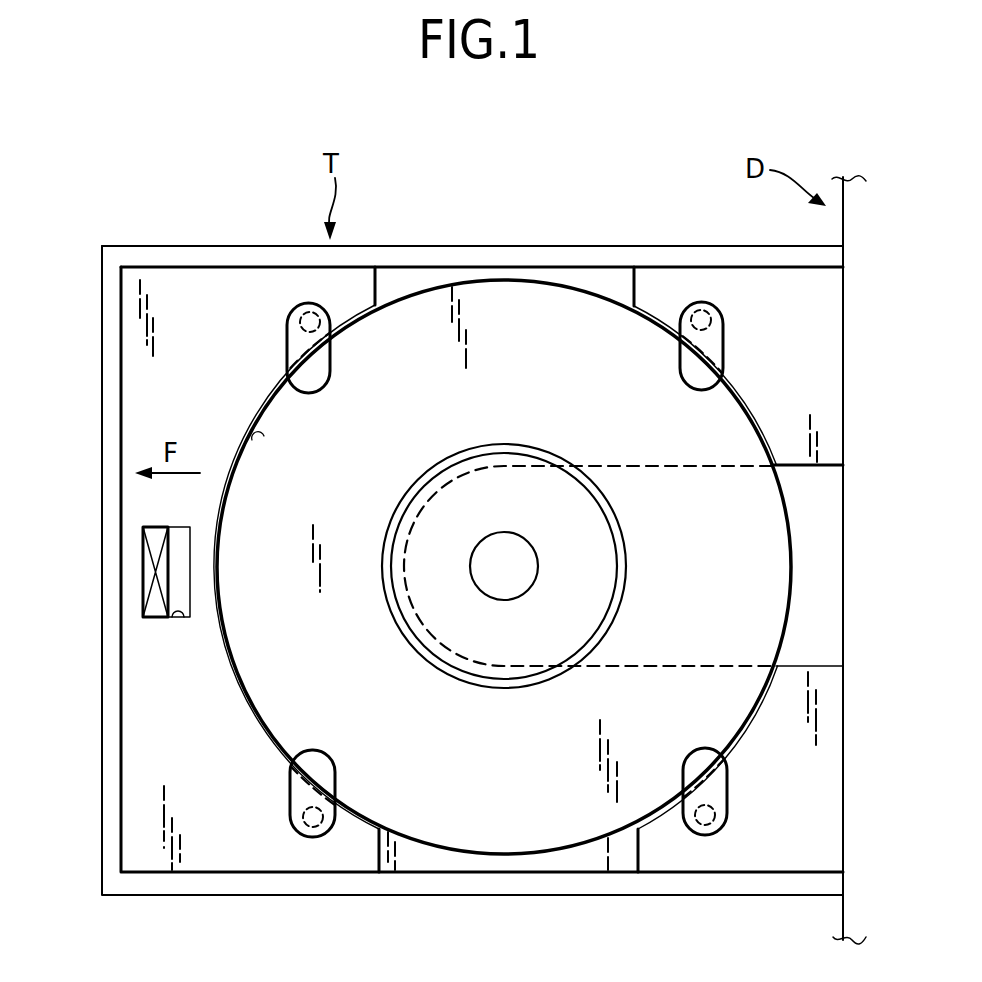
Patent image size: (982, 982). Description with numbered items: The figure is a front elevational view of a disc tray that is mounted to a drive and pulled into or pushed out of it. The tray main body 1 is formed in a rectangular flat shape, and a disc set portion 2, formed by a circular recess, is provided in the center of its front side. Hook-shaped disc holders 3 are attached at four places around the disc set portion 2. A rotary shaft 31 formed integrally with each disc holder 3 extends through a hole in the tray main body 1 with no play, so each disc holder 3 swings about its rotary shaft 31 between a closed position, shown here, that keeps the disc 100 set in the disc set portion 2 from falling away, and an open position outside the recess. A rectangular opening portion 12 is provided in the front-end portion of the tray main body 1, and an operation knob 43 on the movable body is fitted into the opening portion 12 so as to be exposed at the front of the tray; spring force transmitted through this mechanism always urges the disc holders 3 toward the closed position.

The tray main body 1 is at (192, 247).
The disc set portion 2 is at (262, 434).
The disc holder 3 is at (287, 346).
The rotary shaft 31 is at (300, 318).
The opening portion 12 is at (183, 622).
The operation knob 43 is at (150, 575).
The disc 100 is at (757, 538).